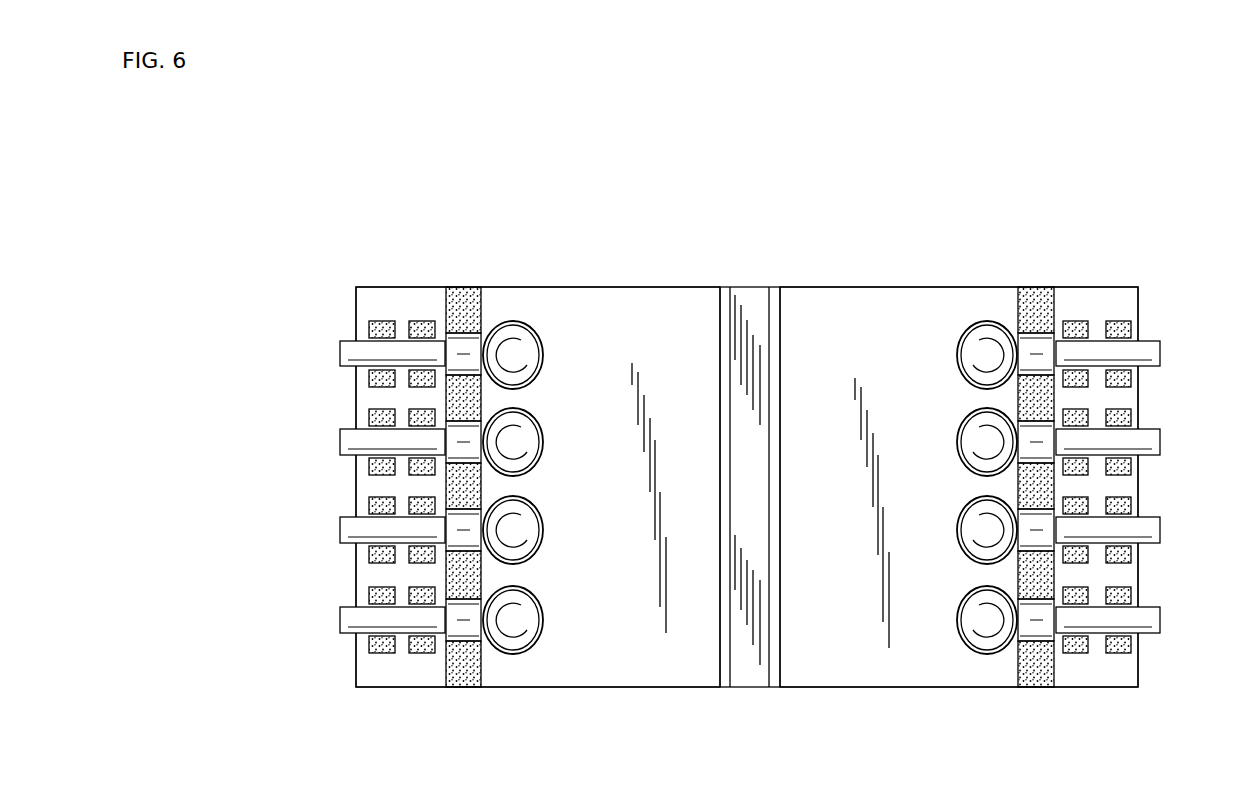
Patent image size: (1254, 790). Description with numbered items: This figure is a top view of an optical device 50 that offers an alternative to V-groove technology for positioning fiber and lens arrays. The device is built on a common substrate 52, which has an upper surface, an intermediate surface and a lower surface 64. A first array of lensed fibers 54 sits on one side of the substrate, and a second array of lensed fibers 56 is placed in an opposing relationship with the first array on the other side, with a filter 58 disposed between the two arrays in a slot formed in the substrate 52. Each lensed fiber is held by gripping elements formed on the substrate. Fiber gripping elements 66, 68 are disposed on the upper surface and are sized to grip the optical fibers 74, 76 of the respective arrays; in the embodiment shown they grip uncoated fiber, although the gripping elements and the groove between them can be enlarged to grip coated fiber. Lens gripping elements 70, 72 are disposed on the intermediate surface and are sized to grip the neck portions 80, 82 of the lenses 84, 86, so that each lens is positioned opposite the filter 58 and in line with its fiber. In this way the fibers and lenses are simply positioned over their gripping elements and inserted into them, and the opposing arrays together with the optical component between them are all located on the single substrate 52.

The optical device 50 is at (432, 167).
The substrate 52 is at (815, 288).
The first array of lensed fibers 54 is at (399, 298).
The second array of lensed fibers 56 is at (1090, 293).
The filter 58 is at (752, 300).
The lower surface 64 is at (618, 650).
The fiber gripping elements 66 is at (372, 330).
The fiber gripping elements 68 is at (1140, 329).
The lens gripping elements 70 is at (470, 398).
The lens gripping elements 72 is at (1030, 398).
The optical fibers 74 is at (343, 545).
The optical fibers 76 is at (1155, 546).
The neck portions 80 is at (480, 442).
The neck portions 82 is at (1025, 440).
The lenses 84 is at (535, 430).
The lenses 86 is at (960, 435).